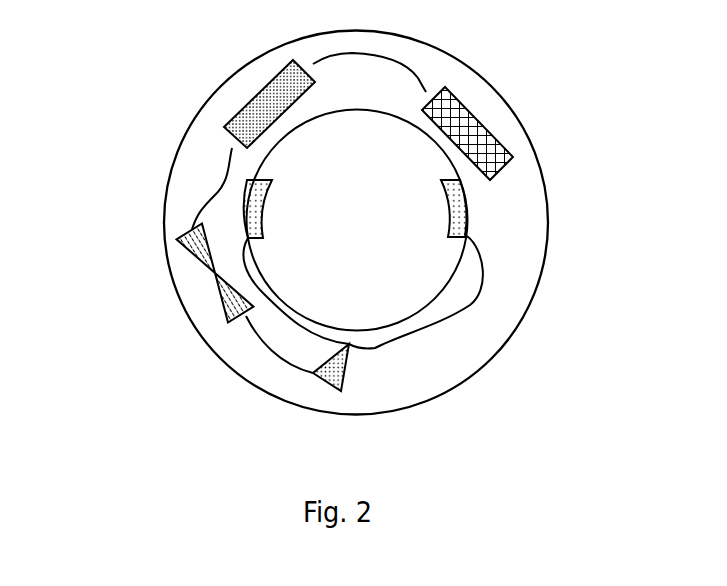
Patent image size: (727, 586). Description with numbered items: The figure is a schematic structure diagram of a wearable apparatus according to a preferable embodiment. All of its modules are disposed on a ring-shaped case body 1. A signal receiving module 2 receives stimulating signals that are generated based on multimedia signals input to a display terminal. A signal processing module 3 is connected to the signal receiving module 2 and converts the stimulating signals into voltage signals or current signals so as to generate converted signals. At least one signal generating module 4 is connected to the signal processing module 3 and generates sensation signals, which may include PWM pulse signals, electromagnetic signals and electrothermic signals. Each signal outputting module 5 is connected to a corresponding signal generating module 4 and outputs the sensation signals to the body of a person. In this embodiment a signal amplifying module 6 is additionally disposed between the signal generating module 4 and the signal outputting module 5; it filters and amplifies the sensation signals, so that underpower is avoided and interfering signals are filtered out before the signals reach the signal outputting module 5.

The case body 1 is at (527, 115).
The signal receiving module 2 is at (463, 105).
The signal processing module 3 is at (249, 103).
The signal generating module 4 is at (221, 309).
The signal outputting module 5 is at (467, 227).
The signal amplifying module 6 is at (333, 377).